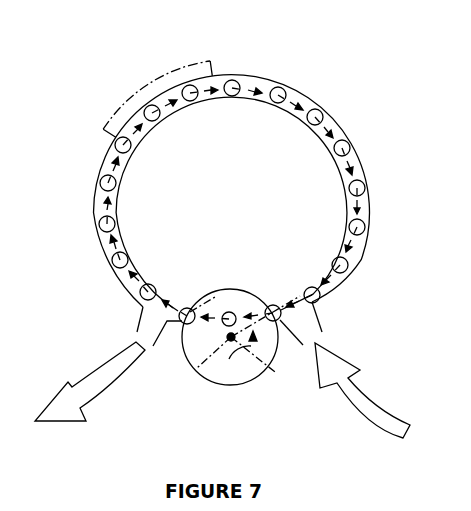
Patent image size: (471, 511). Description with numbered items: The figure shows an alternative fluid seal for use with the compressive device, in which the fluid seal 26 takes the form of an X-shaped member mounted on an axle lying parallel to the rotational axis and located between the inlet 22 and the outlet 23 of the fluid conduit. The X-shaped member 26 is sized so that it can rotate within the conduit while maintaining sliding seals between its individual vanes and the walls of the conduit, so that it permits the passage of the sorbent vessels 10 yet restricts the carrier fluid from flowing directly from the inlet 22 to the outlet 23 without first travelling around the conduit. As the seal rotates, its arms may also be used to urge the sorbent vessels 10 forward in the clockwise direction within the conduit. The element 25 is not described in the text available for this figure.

The sorbent vessels 10 is at (106, 224).
The inlet 22 is at (317, 323).
The outlet 23 is at (140, 323).
The arc segment 25 is at (187, 68).
The fluid seal 26 is at (183, 352).